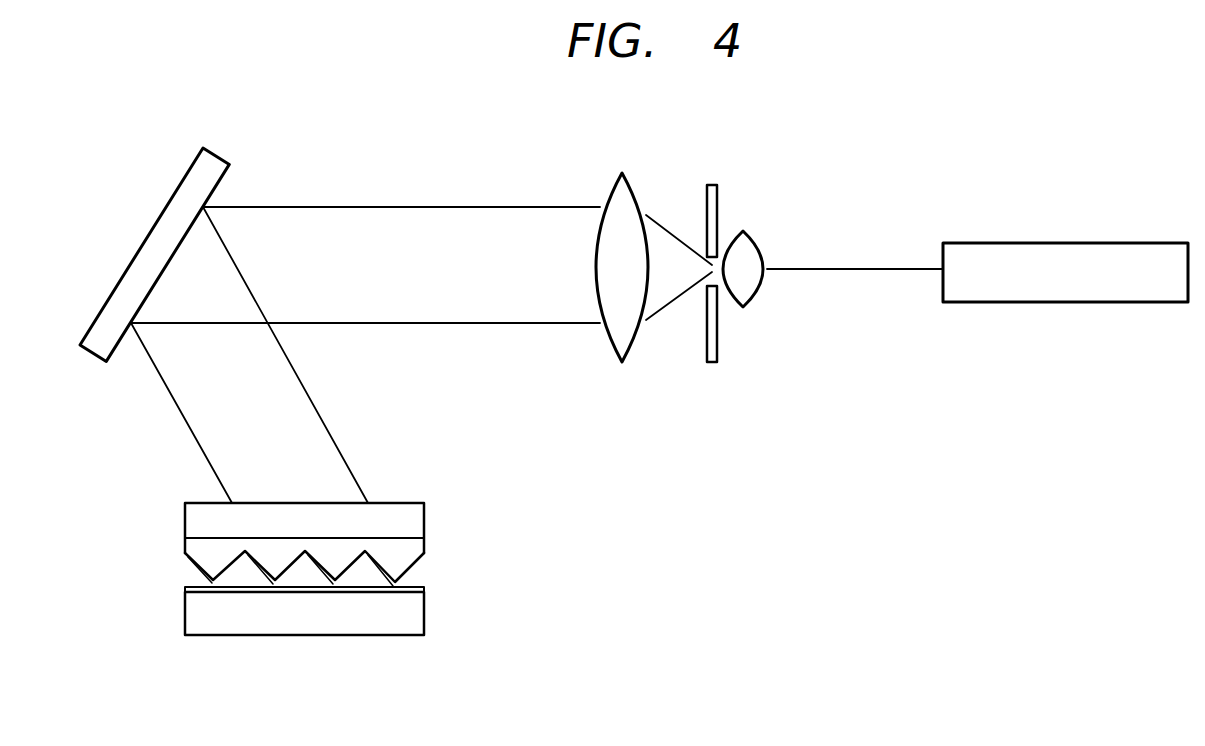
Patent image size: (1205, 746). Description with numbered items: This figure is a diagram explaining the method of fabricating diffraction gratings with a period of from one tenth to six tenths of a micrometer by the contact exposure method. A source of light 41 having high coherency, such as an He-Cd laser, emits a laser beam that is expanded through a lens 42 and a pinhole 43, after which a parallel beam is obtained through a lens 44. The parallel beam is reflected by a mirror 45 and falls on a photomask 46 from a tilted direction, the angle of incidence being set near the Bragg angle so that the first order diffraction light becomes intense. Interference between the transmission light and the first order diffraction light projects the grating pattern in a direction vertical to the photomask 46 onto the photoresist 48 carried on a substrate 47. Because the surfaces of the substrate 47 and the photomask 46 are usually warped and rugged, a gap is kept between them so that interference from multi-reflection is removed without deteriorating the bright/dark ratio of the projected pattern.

The source of light 41 is at (1040, 243).
The lens 42 is at (750, 303).
The pinhole 43 is at (718, 202).
The lens 44 is at (617, 183).
The mirror 45 is at (182, 182).
The photomask 46 is at (410, 503).
The substrate 47 is at (388, 635).
The photoresist 48 is at (410, 583).